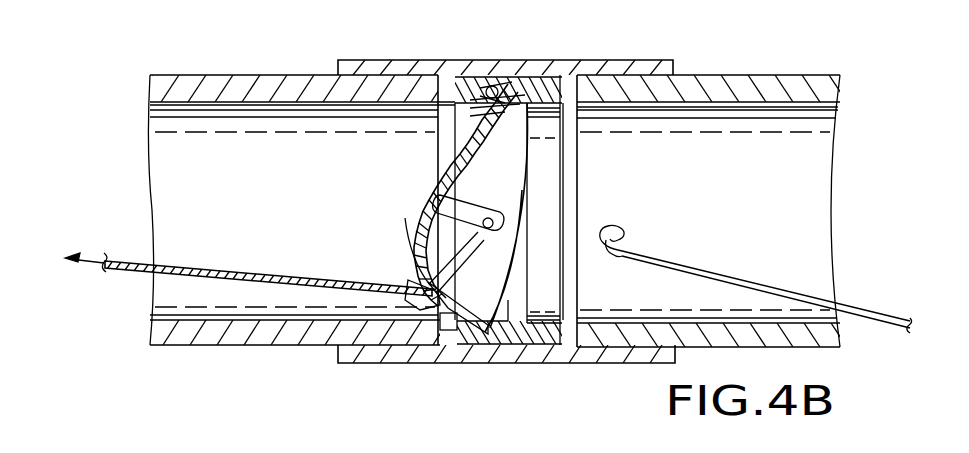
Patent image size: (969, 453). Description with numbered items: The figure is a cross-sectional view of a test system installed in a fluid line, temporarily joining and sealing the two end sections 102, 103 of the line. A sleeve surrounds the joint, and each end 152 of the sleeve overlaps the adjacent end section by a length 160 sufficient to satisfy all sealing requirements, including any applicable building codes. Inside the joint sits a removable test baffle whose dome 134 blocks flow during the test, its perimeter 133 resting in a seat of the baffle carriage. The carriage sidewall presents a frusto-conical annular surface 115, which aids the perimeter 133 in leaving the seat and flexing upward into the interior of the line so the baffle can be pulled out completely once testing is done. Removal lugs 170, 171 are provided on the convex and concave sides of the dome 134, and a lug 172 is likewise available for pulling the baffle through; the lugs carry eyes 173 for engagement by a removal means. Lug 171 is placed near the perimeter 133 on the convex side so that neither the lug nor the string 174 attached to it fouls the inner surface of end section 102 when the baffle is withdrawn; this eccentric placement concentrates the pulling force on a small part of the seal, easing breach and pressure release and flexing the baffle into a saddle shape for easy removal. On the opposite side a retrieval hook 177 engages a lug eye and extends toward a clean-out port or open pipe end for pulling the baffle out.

The end section 102 is at (294, 167).
The end section 103 is at (777, 185).
The frusto-conical annular surface 115 is at (493, 86).
The perimeter 133 is at (462, 331).
The dome 134 is at (415, 215).
The end 152 is at (338, 66).
The length 160 is at (438, 32).
The lug 170 is at (410, 270).
The lug 171 is at (495, 228).
The lug 172 is at (478, 196).
The eye 173 is at (497, 221).
The string 174 is at (233, 264).
The retrieval hook 177 is at (868, 313).